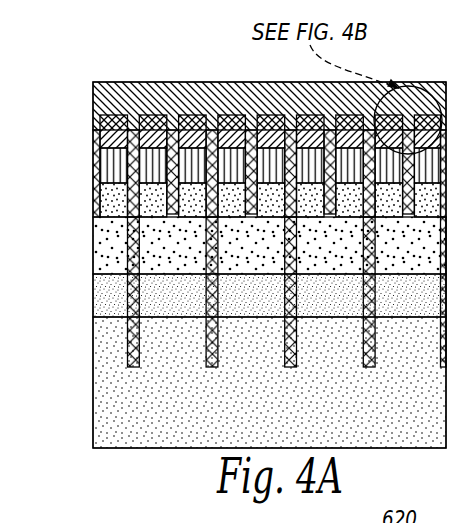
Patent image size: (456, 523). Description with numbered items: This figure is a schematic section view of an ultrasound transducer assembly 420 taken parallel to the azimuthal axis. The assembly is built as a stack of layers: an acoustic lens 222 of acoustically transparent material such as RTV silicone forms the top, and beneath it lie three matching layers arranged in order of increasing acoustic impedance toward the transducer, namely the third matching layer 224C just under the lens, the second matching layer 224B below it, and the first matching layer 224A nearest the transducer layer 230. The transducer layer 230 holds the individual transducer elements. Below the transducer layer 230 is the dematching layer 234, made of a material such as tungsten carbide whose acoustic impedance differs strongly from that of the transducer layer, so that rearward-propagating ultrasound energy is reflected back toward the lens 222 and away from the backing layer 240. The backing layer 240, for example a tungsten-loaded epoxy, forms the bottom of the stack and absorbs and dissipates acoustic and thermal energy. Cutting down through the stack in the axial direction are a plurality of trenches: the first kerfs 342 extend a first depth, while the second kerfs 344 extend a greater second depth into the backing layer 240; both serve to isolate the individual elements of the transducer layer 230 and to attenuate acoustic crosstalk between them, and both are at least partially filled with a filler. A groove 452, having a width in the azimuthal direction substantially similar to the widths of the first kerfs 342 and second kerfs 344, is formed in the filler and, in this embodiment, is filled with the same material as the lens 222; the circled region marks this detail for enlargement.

The transducer assembly 420 is at (165, 63).
The acoustic lens 222 is at (105, 100).
The third matching layer 224C is at (104, 130).
The second matching layer 224B is at (107, 167).
The first matching layer 224A is at (107, 203).
The transducer layer 230 is at (107, 243).
The dematching layer 234 is at (107, 283).
The backing layer 240 is at (108, 383).
The first kerfs 342 is at (204, 128).
The second kerfs 344 is at (125, 347).
The groove 452 is at (430, 96).